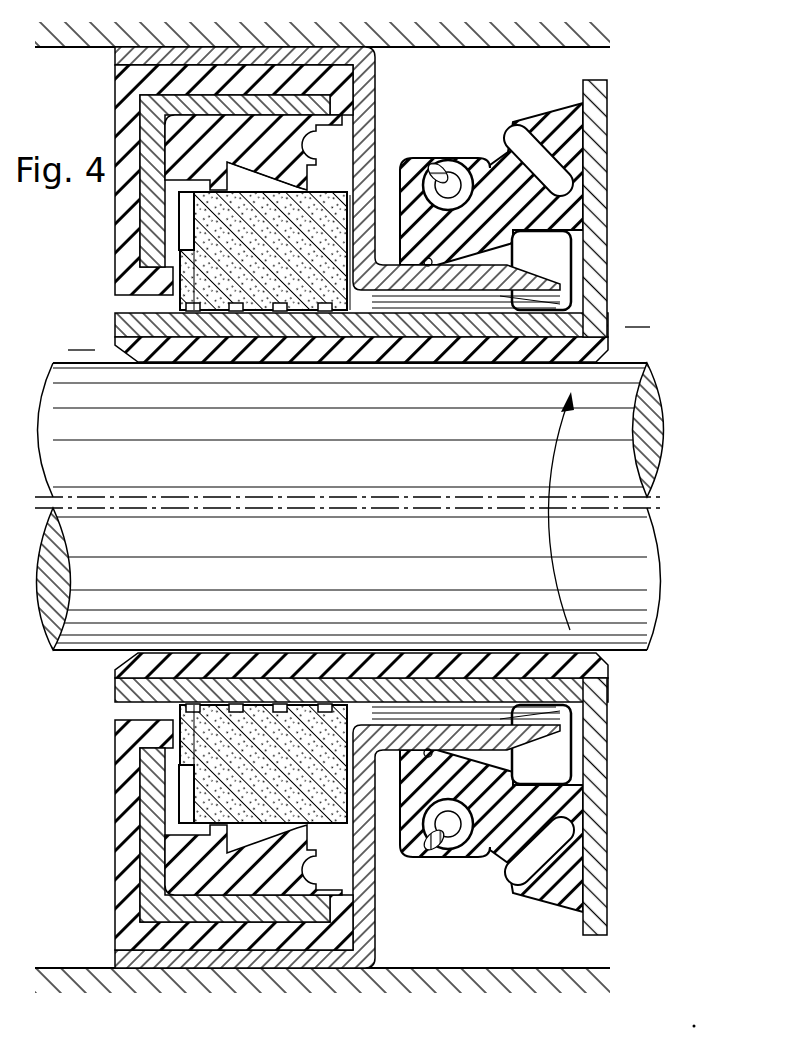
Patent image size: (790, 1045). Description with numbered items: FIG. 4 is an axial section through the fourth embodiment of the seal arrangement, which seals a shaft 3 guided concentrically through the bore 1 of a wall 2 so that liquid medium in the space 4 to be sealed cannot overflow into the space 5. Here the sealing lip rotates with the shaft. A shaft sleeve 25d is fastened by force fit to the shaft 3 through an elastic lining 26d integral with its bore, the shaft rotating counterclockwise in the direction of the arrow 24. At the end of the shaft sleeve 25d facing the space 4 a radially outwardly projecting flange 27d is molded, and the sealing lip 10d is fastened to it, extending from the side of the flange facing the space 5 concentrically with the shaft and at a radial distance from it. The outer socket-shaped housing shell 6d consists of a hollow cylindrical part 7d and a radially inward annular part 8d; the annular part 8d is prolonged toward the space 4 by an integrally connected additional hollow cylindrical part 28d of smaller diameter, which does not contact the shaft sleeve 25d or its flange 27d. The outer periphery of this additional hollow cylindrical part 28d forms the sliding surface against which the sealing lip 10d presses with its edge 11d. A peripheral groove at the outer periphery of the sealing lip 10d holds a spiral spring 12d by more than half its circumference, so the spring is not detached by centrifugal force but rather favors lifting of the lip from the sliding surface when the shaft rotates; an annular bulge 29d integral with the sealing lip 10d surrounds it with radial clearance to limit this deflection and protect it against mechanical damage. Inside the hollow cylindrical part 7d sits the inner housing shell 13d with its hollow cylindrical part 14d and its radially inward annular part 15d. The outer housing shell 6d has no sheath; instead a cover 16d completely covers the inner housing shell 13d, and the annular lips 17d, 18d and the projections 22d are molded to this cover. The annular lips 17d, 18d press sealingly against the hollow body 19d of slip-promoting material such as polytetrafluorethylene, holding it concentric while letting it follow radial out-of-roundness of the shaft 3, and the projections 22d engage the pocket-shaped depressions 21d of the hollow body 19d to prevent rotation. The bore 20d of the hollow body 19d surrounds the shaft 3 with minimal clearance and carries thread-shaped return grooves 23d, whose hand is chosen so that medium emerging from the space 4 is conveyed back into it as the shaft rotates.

The bore 1 is at (533, 47).
The wall 2 is at (437, 47).
The shaft 3 is at (340, 486).
The space to be sealed 4 is at (637, 315).
The space 5 is at (81, 338).
The outer socket-shaped housing shell 6d is at (367, 58).
The hollow cylindrical part 7d is at (120, 56).
The annular part 8d is at (353, 210).
The sealing lip 10d is at (540, 208).
The edge 11d is at (430, 266).
The spiral spring 12d is at (430, 165).
The inner housing shell 13d is at (130, 903).
The hollow cylindrical part 14d is at (272, 105).
The annular part 15d is at (140, 797).
The cover 16d is at (130, 98).
The annular lip 17d is at (215, 193).
The annular lip 18d is at (308, 172).
The hollow body 19d is at (197, 277).
The bore 20d is at (263, 330).
The pocket-shaped depressions 21d is at (195, 815).
The projections 22d is at (182, 234).
The thread-shaped return grooves 23d is at (290, 280).
The arrow 24 is at (553, 536).
The shaft sleeve 25d is at (117, 690).
The elastic lining 26d is at (358, 347).
The flange 27d is at (600, 113).
The additional hollow cylindrical part 28d is at (562, 283).
The annular bulge 29d is at (540, 130).